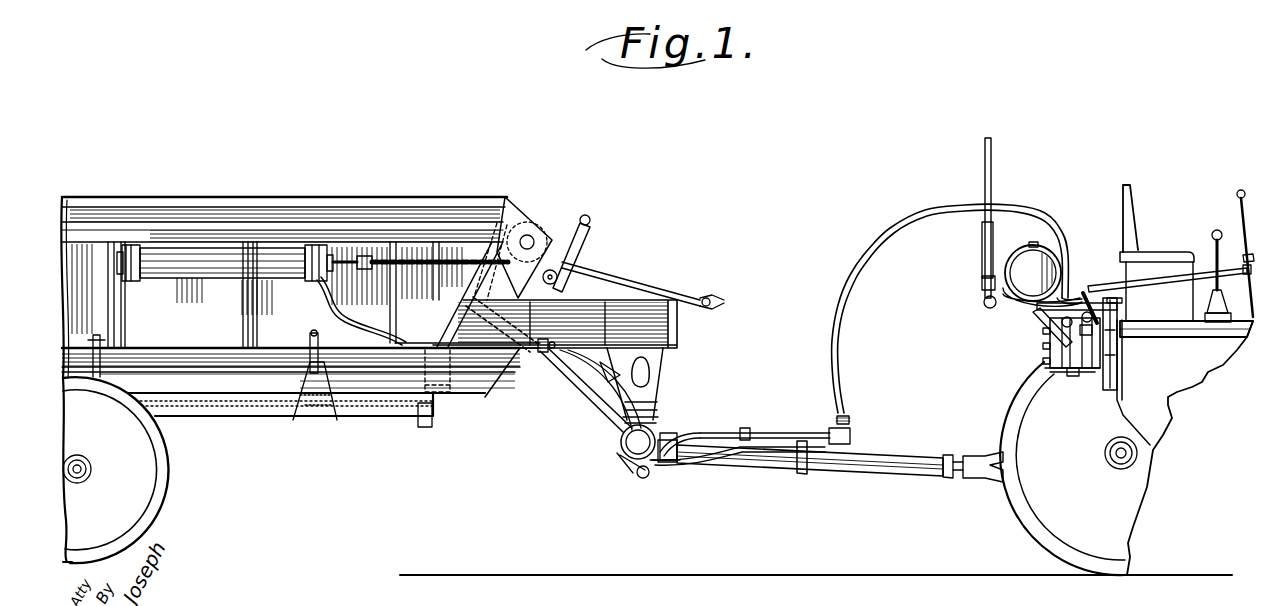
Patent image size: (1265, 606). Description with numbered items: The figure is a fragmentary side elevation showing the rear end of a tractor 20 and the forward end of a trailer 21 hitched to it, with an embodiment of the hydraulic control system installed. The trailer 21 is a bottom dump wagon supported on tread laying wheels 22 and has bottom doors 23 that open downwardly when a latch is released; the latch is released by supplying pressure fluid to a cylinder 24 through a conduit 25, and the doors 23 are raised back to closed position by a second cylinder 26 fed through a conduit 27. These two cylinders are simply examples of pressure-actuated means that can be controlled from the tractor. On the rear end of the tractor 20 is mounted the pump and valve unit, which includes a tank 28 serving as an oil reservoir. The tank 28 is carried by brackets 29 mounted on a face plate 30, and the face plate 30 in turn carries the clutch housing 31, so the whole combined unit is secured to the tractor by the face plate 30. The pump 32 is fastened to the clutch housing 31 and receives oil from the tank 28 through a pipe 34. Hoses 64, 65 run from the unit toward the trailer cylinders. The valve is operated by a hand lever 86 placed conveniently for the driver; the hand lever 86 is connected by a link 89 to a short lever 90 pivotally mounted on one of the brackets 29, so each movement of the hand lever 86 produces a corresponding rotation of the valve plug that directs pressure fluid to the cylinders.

The tractor 20 is at (1173, 390).
The trailer 21 is at (210, 328).
The tread laying wheels 22 is at (133, 482).
The bottom doors 23 is at (240, 418).
The cylinder 24 is at (632, 290).
The conduit 25 is at (680, 338).
The cylinder 26 is at (225, 270).
The conduit 27 is at (338, 313).
The tank 28 is at (1025, 287).
The brackets 29 is at (994, 306).
The face plate 30 is at (1124, 318).
The clutch housing 31 is at (1108, 357).
The pump 32 is at (1055, 367).
The pipe 34 is at (1047, 328).
The pressure hose 64 is at (925, 212).
The return hose 65 is at (938, 220).
The hand lever 86 is at (1241, 210).
The link 89 is at (1198, 258).
The short lever 90 is at (1090, 288).